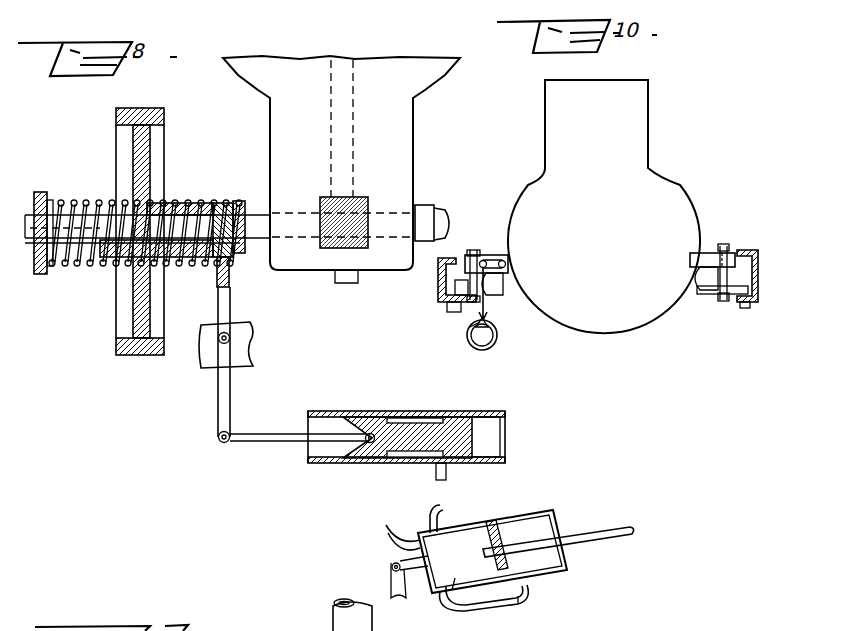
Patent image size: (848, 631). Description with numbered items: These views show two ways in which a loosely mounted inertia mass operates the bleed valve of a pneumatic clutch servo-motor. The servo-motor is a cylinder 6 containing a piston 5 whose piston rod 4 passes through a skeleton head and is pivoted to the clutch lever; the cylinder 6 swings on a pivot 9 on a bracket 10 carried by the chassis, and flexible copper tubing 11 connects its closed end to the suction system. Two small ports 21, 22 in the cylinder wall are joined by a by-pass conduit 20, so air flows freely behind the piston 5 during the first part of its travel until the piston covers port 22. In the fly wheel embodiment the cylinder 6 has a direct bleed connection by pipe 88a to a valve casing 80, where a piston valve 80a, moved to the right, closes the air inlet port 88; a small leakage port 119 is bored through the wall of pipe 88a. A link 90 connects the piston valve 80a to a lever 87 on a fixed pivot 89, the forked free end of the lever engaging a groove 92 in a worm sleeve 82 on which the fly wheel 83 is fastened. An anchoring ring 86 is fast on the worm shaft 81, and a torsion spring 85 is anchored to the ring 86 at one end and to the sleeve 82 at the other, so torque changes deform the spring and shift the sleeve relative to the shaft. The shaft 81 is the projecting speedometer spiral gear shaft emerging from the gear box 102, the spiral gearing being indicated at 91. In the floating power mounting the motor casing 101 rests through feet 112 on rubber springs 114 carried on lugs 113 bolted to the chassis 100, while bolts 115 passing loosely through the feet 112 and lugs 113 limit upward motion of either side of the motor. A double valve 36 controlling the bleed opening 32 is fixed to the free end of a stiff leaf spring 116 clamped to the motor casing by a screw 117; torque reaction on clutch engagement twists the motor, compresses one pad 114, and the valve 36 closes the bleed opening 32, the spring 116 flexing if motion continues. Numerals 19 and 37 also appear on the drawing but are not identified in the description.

In FIG. 8, the piston rod 4 is at (603, 534).
In FIG. 8, the piston 5 is at (487, 537).
In FIG. 8, the cylinder 6 is at (512, 520).
In FIG. 8, the pivot 9 is at (391, 566).
In FIG. 8, the bracket 10 is at (391, 585).
In FIG. 8, the flexible copper tubing 11 is at (468, 342).
In FIG. 8, the pipe 19 is at (386, 531).
In FIG. 8, the by-pass conduit 20 is at (472, 598).
In FIG. 8, the port 21 is at (448, 592).
In FIG. 8, the port 22 is at (508, 594).
In FIG. 8, the bleed opening 32 is at (492, 326).
In FIG. 8, the double valve 36 is at (490, 330).
In FIG. 8, the cylinder 37 is at (325, 630).
In FIG. 8, the valve casing 80 is at (500, 411).
In FIG. 8, the piston valve 80a is at (478, 437).
In FIG. 8, the worm shaft 81 is at (424, 205).
In FIG. 8, the worm sleeve 82 is at (192, 203).
In FIG. 8, the fly wheel 83 is at (157, 352).
In FIG. 8, the torsion spring 85 is at (80, 200).
In FIG. 8, the anchoring ring 86 is at (40, 192).
In FIG. 8, the lever 87 is at (230, 306).
In FIG. 8, the air inlet port 88 is at (387, 411).
In FIG. 8, the pipe 88a is at (440, 508).
In FIG. 8, the fixed pivot 89 is at (230, 338).
In FIG. 8, the link 90 is at (264, 434).
In FIG. 8, the spiral gearing 91 is at (358, 202).
In FIG. 8, the groove 92 is at (226, 206).
In FIG. 8, the chassis 100 is at (438, 290).
In FIG. 10, the chassis 100 is at (757, 282).
In FIG. 10, the motor casing 101 is at (644, 157).
In FIG. 8, the gear box 102 is at (415, 140).
In FIG. 8, the feet 112 is at (360, 282).
In FIG. 10, the feet 112 is at (701, 253).
In FIG. 8, the lugs 113 is at (457, 303).
In FIG. 10, the lugs 113 is at (738, 299).
In FIG. 8, the rubber springs 114 is at (501, 282).
In FIG. 10, the rubber springs 114 is at (703, 276).
In FIG. 8, the bolts 115 is at (470, 252).
In FIG. 10, the bolts 115 is at (727, 246).
In FIG. 8, the leaf spring 116 is at (503, 260).
In FIG. 8, the screw 117 is at (506, 264).
In FIG. 8, the leakage port 119 is at (432, 510).